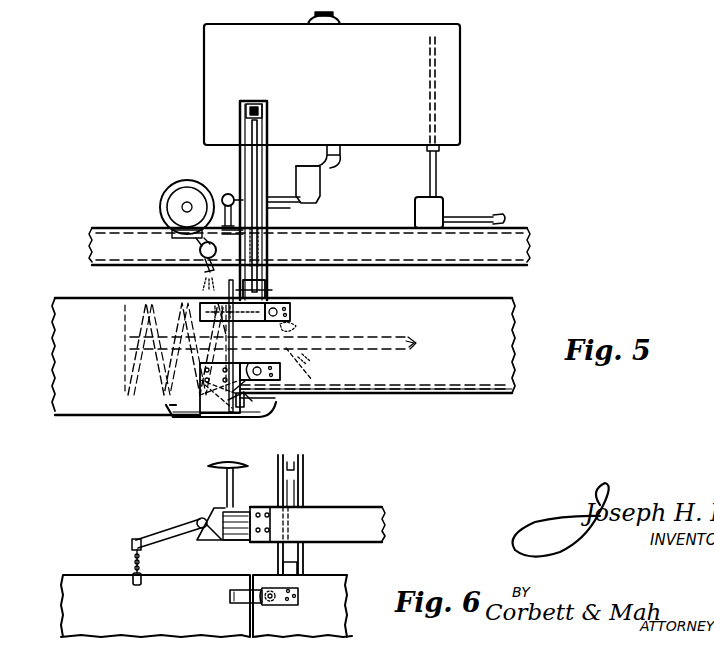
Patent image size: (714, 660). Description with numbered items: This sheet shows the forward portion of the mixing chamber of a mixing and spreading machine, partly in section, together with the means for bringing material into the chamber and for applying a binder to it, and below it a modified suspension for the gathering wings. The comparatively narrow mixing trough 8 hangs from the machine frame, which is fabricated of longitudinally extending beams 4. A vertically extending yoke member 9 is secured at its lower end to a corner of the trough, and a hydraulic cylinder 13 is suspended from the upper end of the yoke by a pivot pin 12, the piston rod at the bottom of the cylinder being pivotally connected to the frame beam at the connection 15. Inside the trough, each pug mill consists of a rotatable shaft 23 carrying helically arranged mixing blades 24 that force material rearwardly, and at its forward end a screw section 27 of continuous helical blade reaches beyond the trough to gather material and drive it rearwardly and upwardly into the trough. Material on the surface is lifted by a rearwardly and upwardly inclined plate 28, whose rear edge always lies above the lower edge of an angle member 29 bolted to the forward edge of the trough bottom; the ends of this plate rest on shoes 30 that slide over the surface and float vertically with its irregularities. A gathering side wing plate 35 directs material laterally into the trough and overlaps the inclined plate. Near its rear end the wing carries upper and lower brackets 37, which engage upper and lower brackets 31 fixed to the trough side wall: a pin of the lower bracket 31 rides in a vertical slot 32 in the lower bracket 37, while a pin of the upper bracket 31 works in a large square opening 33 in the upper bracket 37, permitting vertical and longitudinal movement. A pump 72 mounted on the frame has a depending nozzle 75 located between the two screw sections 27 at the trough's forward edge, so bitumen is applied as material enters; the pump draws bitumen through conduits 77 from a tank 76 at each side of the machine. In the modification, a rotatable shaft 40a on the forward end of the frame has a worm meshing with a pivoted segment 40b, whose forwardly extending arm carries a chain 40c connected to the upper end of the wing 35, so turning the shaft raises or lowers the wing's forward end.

In FIG. 6, the longitudinally extending beam 4 is at (336, 520).
In FIG. 5, the mixing trough 8 is at (433, 312).
In FIG. 6, the mixing trough 8 is at (332, 588).
In FIG. 5, the yoke member 9 is at (268, 126).
In FIG. 6, the yoke member 9 is at (303, 484).
In FIG. 5, the pivot pin 12 is at (264, 106).
In FIG. 5, the hydraulic cylinder 13 is at (257, 145).
In FIG. 6, the hydraulic cylinder 13 is at (287, 462).
In FIG. 5, the pivotal connection 15 is at (270, 292).
In FIG. 6, the pivotal connection 15 is at (278, 566).
In FIG. 5, the rotatable shaft 23 is at (390, 336).
In FIG. 5, the mixing blade 24 is at (328, 393).
In FIG. 5, the screw section 27 is at (138, 308).
In FIG. 5, the inclined plate 28 is at (205, 391).
In FIG. 5, the angle member 29 is at (243, 402).
In FIG. 5, the shoe 30 is at (200, 420).
In FIG. 5, the bracket 31 is at (284, 306).
In FIG. 6, the bracket 31 is at (284, 600).
In FIG. 5, the vertical slot 32 is at (309, 365).
In FIG. 5, the square opening 33 is at (294, 321).
In FIG. 6, the square opening 33 is at (270, 603).
In FIG. 5, the gathering side wing plate 35 is at (72, 306).
In FIG. 6, the gathering side wing plate 35 is at (75, 603).
In FIG. 5, the bracket 37 is at (213, 310).
In FIG. 6, the bracket 37 is at (238, 598).
In FIG. 6, the rotatable shaft 40a is at (230, 482).
In FIG. 6, the segment 40b is at (207, 518).
In FIG. 6, the chain 40c is at (133, 560).
In FIG. 5, the pump 72 is at (185, 197).
In FIG. 5, the nozzle 75 is at (200, 250).
In FIG. 5, the tank 76 is at (448, 95).
In FIG. 5, the conduit 77 is at (238, 201).